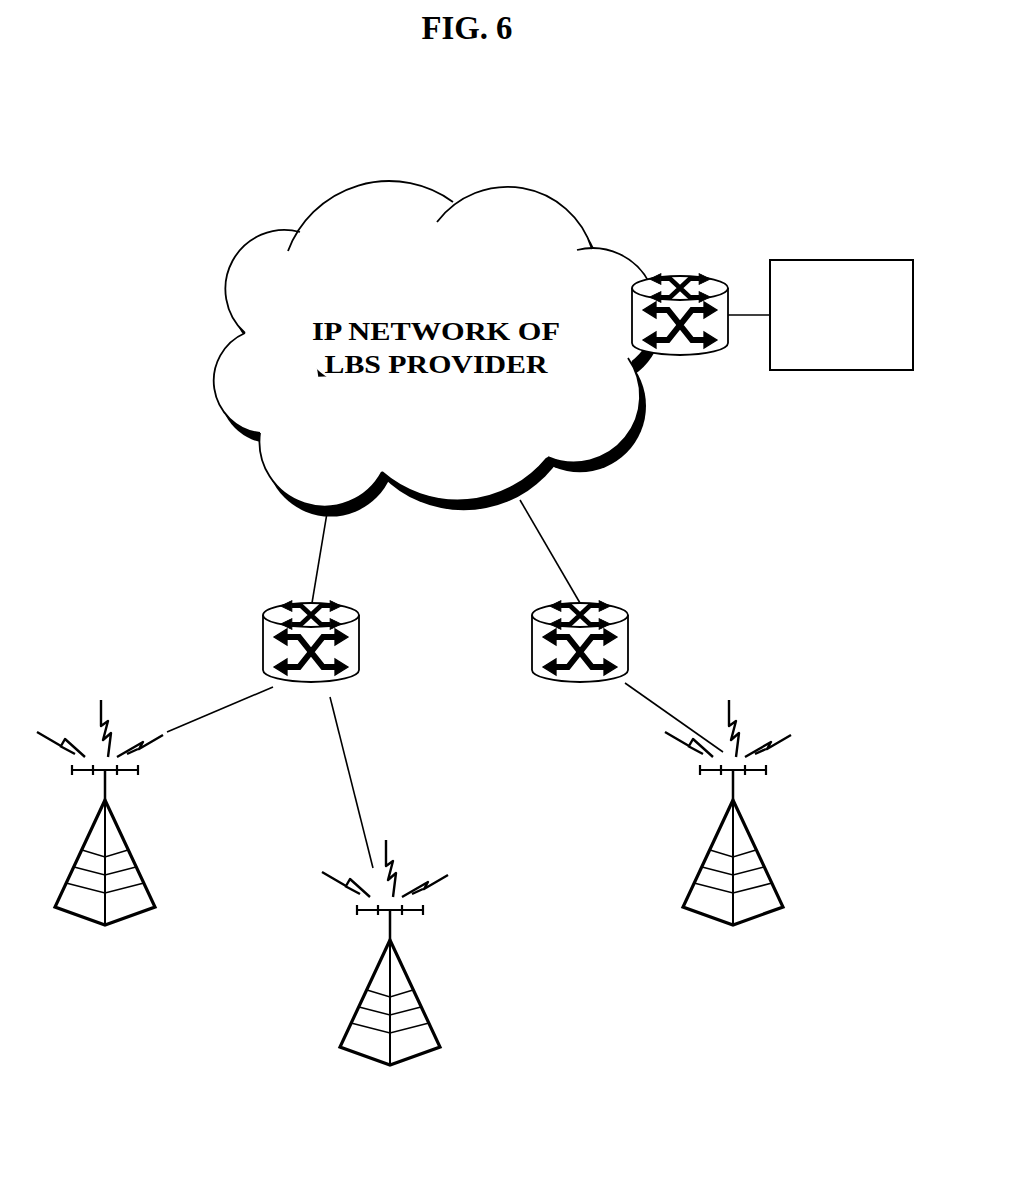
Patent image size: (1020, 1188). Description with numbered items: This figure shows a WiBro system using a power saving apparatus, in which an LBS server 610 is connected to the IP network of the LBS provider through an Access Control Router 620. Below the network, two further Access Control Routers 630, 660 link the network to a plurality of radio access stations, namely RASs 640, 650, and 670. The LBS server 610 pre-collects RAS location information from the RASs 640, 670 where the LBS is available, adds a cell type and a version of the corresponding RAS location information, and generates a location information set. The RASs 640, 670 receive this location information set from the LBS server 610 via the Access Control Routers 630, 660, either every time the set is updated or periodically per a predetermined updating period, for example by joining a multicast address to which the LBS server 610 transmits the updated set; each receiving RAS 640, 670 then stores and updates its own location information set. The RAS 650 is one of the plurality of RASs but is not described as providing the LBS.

The LBS server 610 is at (838, 260).
The Access Control Router 620 is at (673, 274).
The Access Control Router 630 is at (273, 607).
The RAS 640 is at (123, 836).
The RAS 650 is at (407, 974).
The Access Control Router 660 is at (622, 606).
The RAS 670 is at (750, 834).